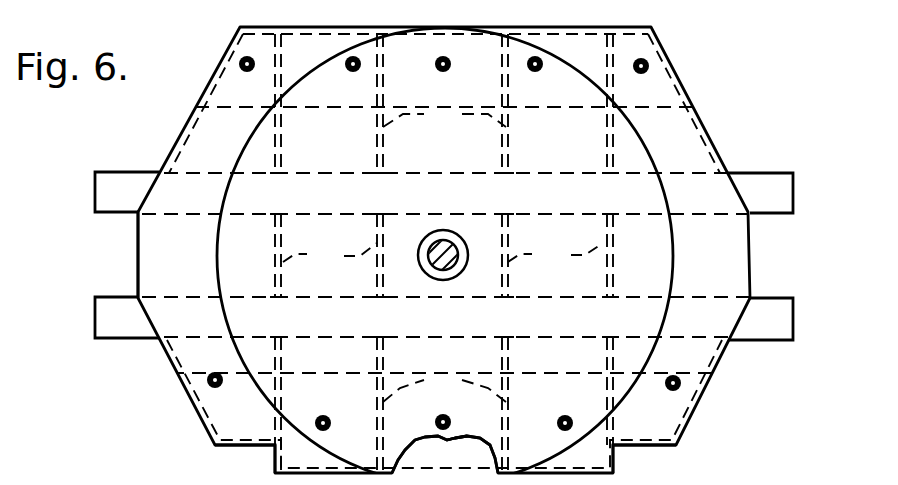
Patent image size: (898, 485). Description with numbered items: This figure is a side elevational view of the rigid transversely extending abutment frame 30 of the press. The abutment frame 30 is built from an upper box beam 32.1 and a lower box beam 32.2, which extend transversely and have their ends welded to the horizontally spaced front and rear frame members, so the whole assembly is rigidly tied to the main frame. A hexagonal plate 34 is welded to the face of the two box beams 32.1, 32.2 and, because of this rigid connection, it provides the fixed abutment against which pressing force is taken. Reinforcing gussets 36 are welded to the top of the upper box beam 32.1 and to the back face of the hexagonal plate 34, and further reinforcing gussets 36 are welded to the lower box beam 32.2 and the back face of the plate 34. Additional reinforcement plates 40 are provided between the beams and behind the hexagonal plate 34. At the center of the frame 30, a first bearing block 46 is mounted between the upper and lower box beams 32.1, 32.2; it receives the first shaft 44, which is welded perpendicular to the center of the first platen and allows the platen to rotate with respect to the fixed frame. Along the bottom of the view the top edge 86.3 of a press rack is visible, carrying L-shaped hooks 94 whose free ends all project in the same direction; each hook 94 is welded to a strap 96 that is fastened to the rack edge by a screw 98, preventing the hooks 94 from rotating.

The abutment frame 30 is at (725, 115).
The upper box beam 32.1 is at (118, 172).
The lower box beam 32.2 is at (125, 333).
The hexagonal plate 34 is at (152, 247).
The reinforcing gussets 36 is at (444, 250).
The reinforcement plates 40 is at (443, 255).
The first shaft 44 is at (481, 192).
The first bearing block 46 is at (422, 242).
The top edge of rack 86.3 is at (292, 483).
The L-shaped hooks 94 is at (256, 484).
The strap 96 is at (640, 483).
The screw 98 is at (458, 470).